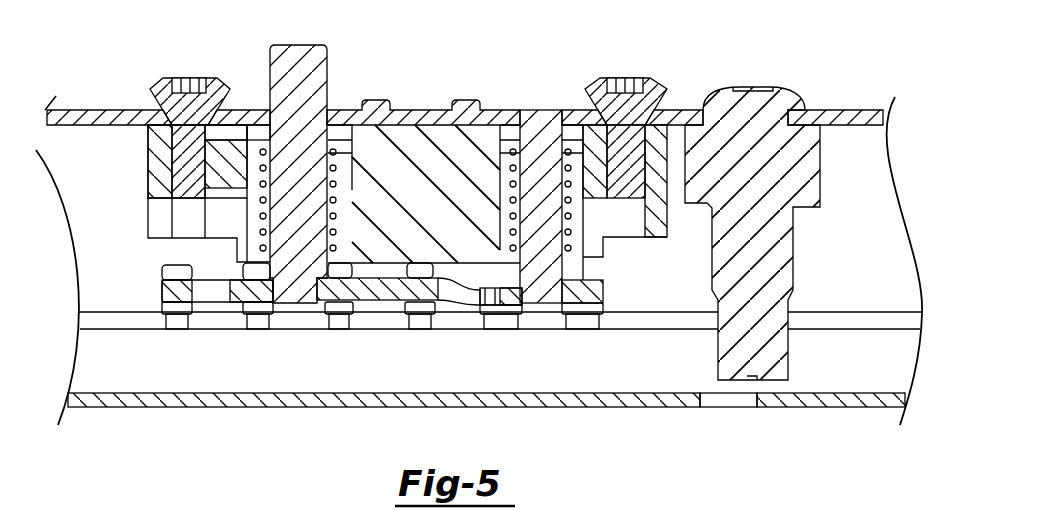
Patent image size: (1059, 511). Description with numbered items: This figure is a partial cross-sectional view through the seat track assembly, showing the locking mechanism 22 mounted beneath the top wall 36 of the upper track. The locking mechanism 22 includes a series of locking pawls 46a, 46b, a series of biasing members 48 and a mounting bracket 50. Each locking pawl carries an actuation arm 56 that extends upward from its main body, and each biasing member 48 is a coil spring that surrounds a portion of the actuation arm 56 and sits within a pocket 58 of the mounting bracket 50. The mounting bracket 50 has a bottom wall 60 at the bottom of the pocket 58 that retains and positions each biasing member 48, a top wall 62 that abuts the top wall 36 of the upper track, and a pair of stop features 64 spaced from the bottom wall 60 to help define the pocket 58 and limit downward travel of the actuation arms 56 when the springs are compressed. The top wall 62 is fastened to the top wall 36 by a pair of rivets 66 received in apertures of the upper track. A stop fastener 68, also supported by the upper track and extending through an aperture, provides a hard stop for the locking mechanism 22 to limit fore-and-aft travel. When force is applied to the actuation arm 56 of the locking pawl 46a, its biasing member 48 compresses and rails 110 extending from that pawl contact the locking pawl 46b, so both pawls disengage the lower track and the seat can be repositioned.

The locking mechanism 22 is at (140, 163).
The top wall 36 is at (845, 113).
The locking pawl 46a is at (373, 308).
The locking pawl 46b is at (583, 308).
The biasing member 48 is at (337, 163).
The mounting bracket 50 is at (140, 212).
The actuation arm 56 is at (303, 57).
The pocket 58 is at (254, 165).
The bottom wall 60 is at (337, 250).
The top wall 62 is at (172, 138).
The stop feature 64 is at (347, 193).
The rivet 66 is at (158, 85).
The stop fastener 68 is at (768, 142).
The rail 110 is at (492, 267).